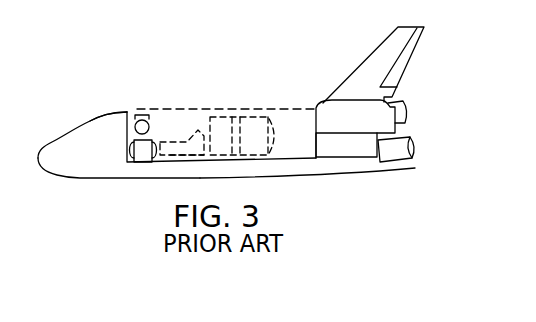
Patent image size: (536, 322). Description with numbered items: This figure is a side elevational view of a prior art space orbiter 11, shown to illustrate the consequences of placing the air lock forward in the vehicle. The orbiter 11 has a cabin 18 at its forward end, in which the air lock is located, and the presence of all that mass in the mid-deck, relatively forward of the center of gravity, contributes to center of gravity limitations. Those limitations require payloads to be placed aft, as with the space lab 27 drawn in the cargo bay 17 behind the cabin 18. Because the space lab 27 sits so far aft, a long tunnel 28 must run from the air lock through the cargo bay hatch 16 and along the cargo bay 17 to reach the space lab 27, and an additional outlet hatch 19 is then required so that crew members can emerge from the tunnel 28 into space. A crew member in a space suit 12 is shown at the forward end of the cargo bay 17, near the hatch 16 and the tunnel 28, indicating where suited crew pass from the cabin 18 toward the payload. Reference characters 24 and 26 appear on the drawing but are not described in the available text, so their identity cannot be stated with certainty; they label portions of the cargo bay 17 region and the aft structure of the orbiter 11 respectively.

The spacecraft 11 is at (65, 132).
The space suits 12 is at (337, 169).
The hatch to cargo bay 16 is at (127, 151).
The cargo bay 17 is at (164, 121).
The cabin 18 is at (108, 112).
The outlet hatch 19 is at (145, 115).
The cargo bay doors 24 is at (138, 111).
The aft bulkhead 26 is at (293, 131).
The space lab 27 is at (249, 117).
The tunnel 28 is at (180, 130).